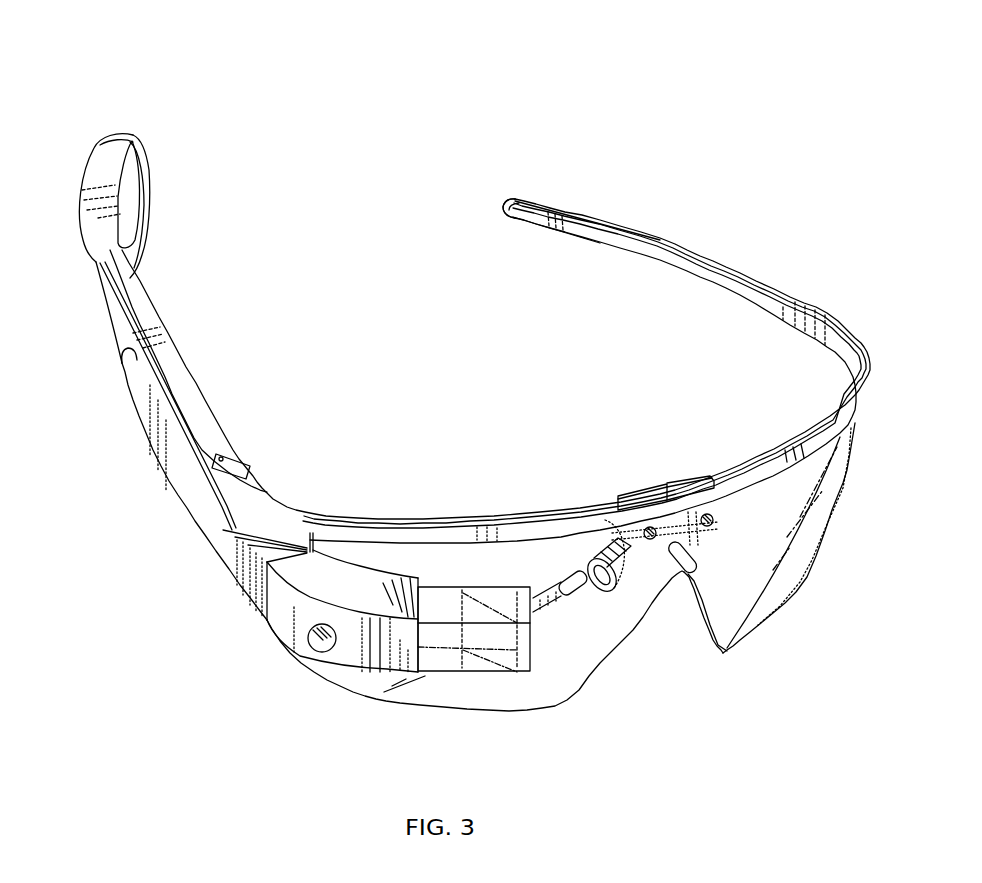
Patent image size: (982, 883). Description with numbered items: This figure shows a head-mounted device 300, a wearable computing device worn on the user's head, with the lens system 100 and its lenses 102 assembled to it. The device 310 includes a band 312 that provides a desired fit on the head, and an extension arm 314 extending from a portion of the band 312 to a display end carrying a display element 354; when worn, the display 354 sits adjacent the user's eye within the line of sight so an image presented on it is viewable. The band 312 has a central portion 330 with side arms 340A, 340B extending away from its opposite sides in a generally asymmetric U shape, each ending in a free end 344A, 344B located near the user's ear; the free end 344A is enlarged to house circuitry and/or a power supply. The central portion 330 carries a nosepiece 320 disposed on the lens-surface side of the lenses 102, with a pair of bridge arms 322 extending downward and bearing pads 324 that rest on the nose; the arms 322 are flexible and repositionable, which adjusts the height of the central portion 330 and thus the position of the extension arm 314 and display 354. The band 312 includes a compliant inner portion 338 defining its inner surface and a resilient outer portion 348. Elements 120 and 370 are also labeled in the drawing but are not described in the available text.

The lens system 100 is at (266, 718).
The lenses 102 is at (777, 597).
The component housing 120 is at (690, 483).
The head-mounted device 300 is at (159, 706).
The device assembly 310 is at (167, 70).
The band 312 is at (817, 268).
The extension arm 314 is at (176, 607).
The nosepiece 320 is at (627, 592).
The bridge arms 322 is at (617, 565).
The pads 324 is at (687, 580).
The central portion 330 is at (668, 497).
The compliant inner portion 338 is at (783, 307).
The side arm 340A is at (173, 378).
The side arm 340B is at (660, 262).
The free end 344A is at (140, 200).
The free end 344B is at (505, 207).
The resilient outer portion 348 is at (120, 325).
The display element 354 is at (470, 656).
The side housing 370 is at (187, 492).